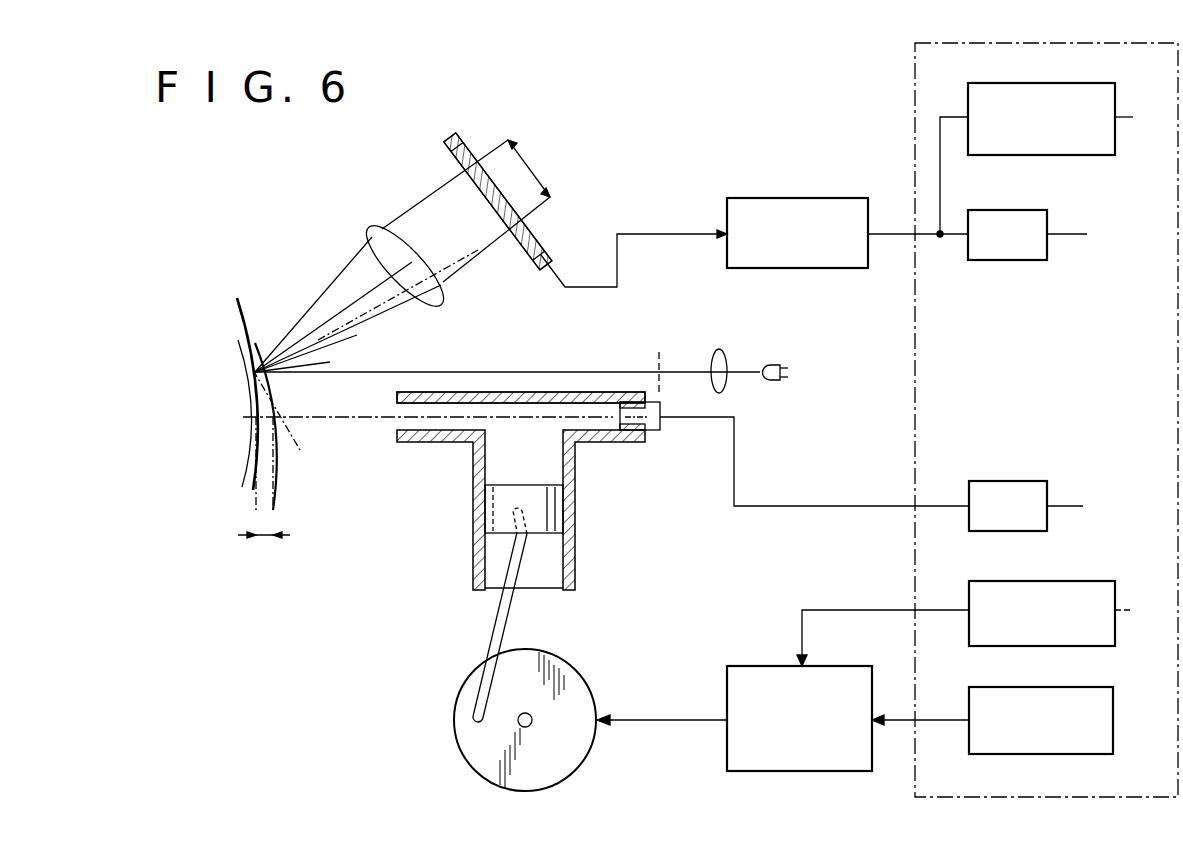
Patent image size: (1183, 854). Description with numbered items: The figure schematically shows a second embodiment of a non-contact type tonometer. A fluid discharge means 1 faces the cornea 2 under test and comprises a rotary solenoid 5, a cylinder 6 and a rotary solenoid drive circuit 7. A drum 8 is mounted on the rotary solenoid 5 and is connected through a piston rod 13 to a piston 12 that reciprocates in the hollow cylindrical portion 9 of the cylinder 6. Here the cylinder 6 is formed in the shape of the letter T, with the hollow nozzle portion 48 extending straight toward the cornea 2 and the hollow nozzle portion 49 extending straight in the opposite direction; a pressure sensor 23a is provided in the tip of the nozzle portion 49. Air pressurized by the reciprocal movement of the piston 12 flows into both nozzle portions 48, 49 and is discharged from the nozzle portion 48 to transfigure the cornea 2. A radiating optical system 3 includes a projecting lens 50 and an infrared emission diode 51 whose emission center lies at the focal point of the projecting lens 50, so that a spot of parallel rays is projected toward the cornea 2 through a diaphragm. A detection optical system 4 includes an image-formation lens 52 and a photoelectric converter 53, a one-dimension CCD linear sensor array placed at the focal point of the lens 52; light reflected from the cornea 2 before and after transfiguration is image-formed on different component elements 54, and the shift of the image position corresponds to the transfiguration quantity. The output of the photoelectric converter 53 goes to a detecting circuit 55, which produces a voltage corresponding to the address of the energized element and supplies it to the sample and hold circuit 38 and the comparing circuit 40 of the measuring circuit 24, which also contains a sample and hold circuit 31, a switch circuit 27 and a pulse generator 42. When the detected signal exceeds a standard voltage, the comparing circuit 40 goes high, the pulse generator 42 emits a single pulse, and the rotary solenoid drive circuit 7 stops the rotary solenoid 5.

The fluid discharge means 1 is at (455, 562).
The cornea 2 is at (272, 460).
The radiating optical system 3 is at (745, 350).
The detection optical system 4 is at (383, 185).
The rotary solenoid 5 is at (598, 685).
The cylinder 6 is at (577, 497).
The rotary solenoid drive circuit 7 is at (852, 666).
The drum 8 is at (467, 742).
The hollow cylindrical portion 9 is at (485, 472).
The piston 12 is at (557, 520).
The piston rod 13 is at (490, 640).
The pressure sensor 23a is at (656, 418).
The measuring circuit 24 is at (913, 100).
The switch circuit 27 is at (1110, 688).
The sample and hold circuit 31 is at (1032, 482).
The sample and hold circuit 38 is at (1047, 212).
The comparing circuit 40 is at (1115, 83).
The pulse generator 42 is at (1083, 581).
The hollow nozzle portion 48 is at (405, 425).
The hollow nozzle portion 49 is at (613, 420).
The projecting lens 50 is at (712, 362).
The infrared emission diode 51 is at (773, 364).
The image-formation lens 52 is at (380, 225).
The photoelectric converter 53 is at (474, 150).
The component elements 54 is at (455, 140).
The detecting circuit 55 is at (848, 198).